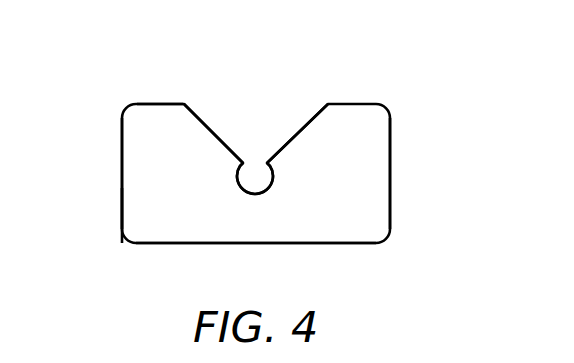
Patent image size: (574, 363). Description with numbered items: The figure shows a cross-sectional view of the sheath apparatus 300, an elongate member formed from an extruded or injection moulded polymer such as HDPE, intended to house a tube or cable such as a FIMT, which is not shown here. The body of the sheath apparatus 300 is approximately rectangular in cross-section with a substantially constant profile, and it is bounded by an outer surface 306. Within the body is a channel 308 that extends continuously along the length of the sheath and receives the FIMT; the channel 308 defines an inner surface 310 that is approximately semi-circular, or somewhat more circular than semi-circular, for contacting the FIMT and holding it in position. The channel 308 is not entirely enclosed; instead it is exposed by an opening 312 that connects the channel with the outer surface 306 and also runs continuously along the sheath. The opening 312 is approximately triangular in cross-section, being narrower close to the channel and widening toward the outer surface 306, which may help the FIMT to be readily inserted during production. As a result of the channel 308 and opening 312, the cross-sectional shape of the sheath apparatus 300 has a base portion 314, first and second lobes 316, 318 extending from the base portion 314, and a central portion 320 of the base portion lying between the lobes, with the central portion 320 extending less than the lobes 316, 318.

The sheath apparatus 300 is at (395, 217).
The outer surface 306 is at (150, 104).
The channel 308 is at (266, 186).
The inner surface 310 is at (246, 187).
The opening 312 is at (250, 125).
The base portion 314 is at (104, 188).
The first lobe 316 is at (130, 143).
The second lobe 318 is at (378, 143).
The central portion 320 is at (255, 234).